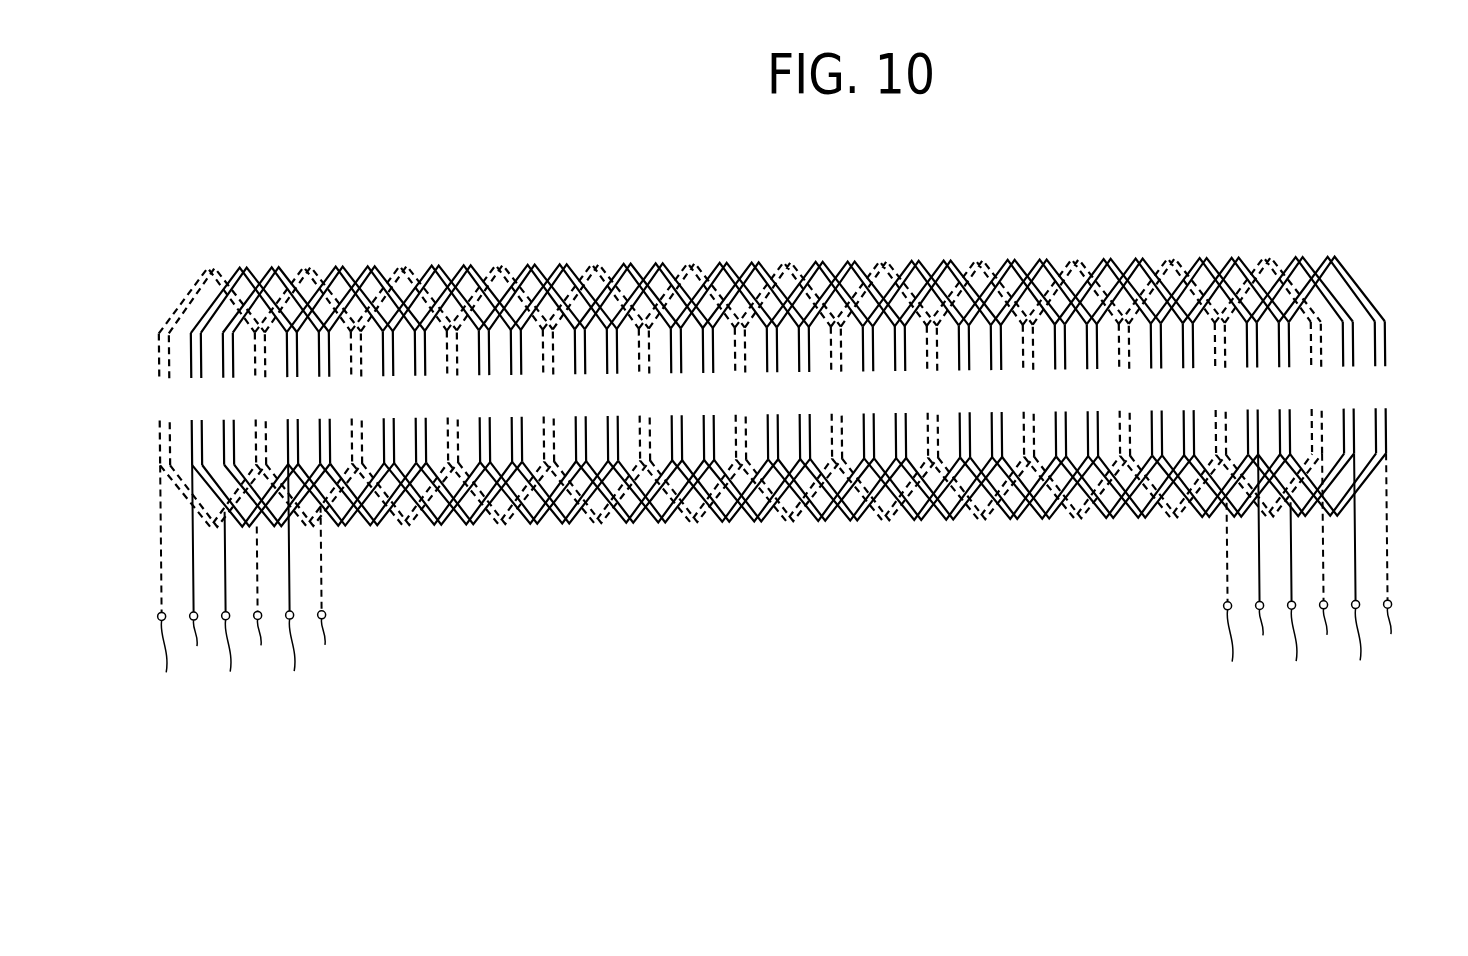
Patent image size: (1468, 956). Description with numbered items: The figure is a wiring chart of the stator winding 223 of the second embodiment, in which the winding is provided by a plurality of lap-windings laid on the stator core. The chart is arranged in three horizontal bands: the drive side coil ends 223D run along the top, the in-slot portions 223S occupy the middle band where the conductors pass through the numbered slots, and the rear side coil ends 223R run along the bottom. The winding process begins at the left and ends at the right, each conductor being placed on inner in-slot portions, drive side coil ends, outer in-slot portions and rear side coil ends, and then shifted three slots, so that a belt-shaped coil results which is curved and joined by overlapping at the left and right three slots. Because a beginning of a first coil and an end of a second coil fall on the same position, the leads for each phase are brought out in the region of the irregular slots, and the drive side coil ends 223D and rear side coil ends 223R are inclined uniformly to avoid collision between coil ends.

The stator winding 223 is at (1050, 209).
The drive side coil ends 223D is at (1397, 237).
The slot conductor portion 223S is at (1397, 323).
The rear side coil ends 223R is at (1397, 452).